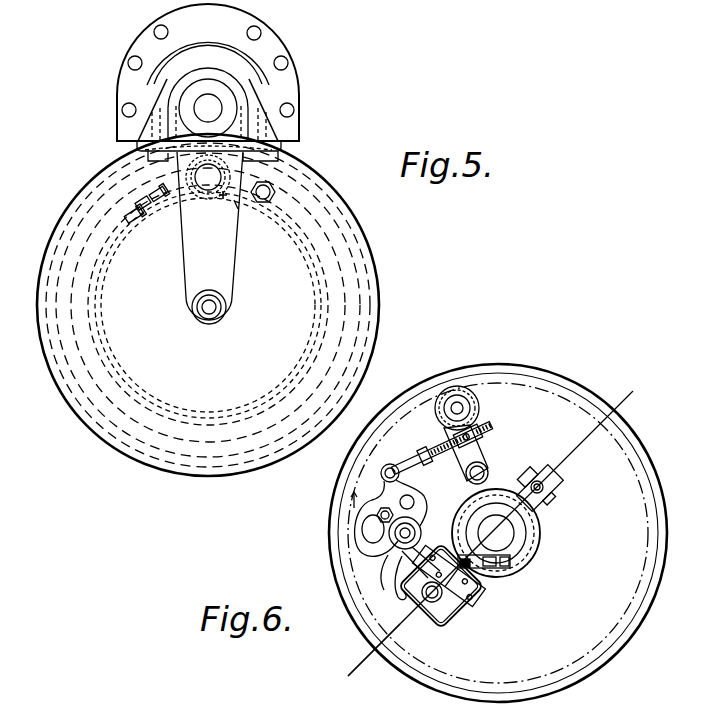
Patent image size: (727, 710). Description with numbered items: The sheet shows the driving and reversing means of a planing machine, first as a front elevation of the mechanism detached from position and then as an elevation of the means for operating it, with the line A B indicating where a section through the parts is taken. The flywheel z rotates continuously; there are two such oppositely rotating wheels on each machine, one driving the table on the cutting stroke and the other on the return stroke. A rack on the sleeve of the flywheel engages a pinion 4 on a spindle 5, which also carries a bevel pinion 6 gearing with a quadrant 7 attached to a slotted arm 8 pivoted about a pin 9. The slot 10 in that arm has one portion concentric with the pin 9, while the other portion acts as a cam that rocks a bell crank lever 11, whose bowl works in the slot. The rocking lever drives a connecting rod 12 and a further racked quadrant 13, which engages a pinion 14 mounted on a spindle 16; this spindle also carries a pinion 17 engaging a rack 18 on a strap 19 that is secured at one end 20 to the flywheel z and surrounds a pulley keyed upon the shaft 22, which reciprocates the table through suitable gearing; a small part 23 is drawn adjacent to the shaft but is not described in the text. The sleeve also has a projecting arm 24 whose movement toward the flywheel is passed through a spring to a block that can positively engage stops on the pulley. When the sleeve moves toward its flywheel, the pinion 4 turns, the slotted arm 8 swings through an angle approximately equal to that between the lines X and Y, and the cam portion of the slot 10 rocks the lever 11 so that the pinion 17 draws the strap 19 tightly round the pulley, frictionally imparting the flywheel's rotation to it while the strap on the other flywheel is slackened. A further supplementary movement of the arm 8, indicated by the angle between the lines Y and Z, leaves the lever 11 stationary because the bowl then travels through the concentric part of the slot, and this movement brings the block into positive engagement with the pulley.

In FIG. 6, the pinion 4 is at (455, 604).
In FIG. 6, the spindle 5 is at (480, 592).
In FIG. 6, the bevel pinion 6 is at (405, 560).
In FIG. 6, the quadrant 7 is at (399, 549).
In FIG. 6, the slotted arm 8 is at (372, 553).
In FIG. 6, the pin 9 is at (418, 513).
In FIG. 6, the slot 10 is at (368, 541).
In FIG. 6, the bell crank lever 11 is at (383, 471).
In FIG. 6, the connecting rod 12 is at (447, 449).
In FIG. 6, the racked quadrant 13 is at (482, 456).
In FIG. 6, the pinion 14 is at (476, 406).
In FIG. 5, the spindle 16 is at (209, 192).
In FIG. 5, the pinion 17 is at (236, 207).
In FIG. 5, the rack 18 is at (214, 192).
In FIG. 5, the strap 19 is at (97, 310).
In FIG. 5, the end 20 is at (272, 191).
In FIG. 6, the shaft 22 is at (505, 535).
In FIG. 6, the block 23 is at (497, 572).
In FIG. 6, the projecting arm 24 is at (548, 496).
In FIG. 6, the line A B A is at (370, 700).
In FIG. 6, the line A B is at (504, 521).
In FIG. 6, the line X is at (405, 533).
In FIG. 6, the line Y is at (405, 533).
In FIG. 5, the flywheel Z is at (366, 250).
In FIG. 6, the flywheel Z is at (405, 533).